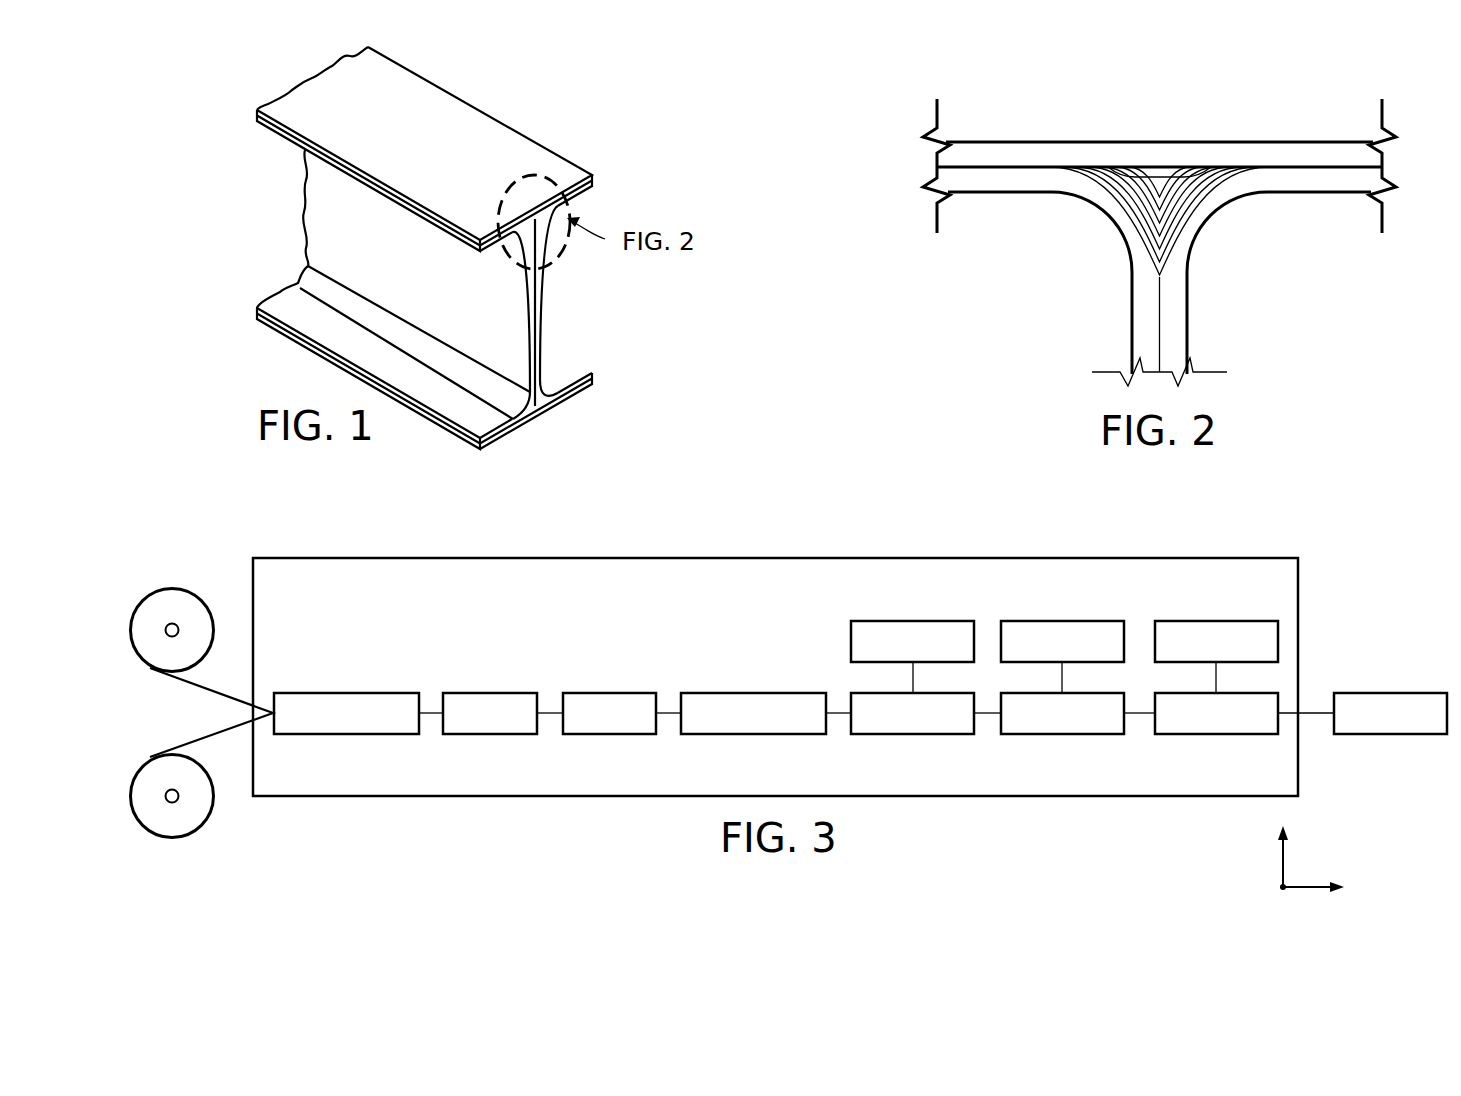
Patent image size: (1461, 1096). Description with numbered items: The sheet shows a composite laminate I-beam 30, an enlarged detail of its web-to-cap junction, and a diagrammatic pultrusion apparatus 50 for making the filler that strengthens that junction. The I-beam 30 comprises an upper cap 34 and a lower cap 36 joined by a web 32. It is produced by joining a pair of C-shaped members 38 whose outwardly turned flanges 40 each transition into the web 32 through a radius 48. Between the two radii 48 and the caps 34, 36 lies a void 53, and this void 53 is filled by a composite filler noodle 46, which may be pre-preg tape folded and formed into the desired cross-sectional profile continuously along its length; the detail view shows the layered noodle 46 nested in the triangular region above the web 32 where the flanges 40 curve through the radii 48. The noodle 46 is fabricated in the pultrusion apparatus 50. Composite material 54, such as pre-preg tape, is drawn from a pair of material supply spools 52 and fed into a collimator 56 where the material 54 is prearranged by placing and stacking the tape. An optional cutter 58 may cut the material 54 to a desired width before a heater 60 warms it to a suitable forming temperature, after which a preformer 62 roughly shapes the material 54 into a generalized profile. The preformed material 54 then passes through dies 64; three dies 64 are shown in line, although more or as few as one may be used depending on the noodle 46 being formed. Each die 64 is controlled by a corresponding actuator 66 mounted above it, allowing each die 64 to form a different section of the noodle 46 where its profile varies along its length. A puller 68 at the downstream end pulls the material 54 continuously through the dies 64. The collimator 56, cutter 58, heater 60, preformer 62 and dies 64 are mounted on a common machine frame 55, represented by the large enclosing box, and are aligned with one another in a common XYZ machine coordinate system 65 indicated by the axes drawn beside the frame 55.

In FIG. 1, the composite laminate I-beam 30 is at (427, 255).
In FIG. 1, the web 32 is at (542, 298).
In FIG. 2, the web 32 is at (1102, 319).
In FIG. 1, the upper cap 34 is at (457, 105).
In FIG. 2, the upper cap 34 is at (1046, 140).
In FIG. 1, the lower cap 36 is at (537, 415).
In FIG. 2, the C-shaped members 38 is at (1132, 330).
In FIG. 2, the outwardly turned flanges 40 is at (990, 194).
In FIG. 2, the composite filler noodle 46 is at (1158, 187).
In FIG. 3, the composite filler noodle 46 is at (1316, 715).
In FIG. 2, the radius 48 is at (1098, 231).
In FIG. 2, the void 53 is at (1212, 206).
In FIG. 3, the pultrusion apparatus 50 is at (775, 637).
In FIG. 3, the material supply spools 52 is at (168, 600).
In FIG. 3, the composite material 54 is at (217, 688).
In FIG. 3, the common machine frame 55 is at (566, 557).
In FIG. 3, the collimator 56 is at (348, 692).
In FIG. 3, the cutter 58 is at (490, 692).
In FIG. 3, the heater 60 is at (609, 692).
In FIG. 3, the preformer 62 is at (753, 692).
In FIG. 3, the dies 64 is at (922, 735).
In FIG. 3, the actuator 66 is at (922, 620).
In FIG. 3, the puller 68 is at (1390, 692).
In FIG. 3, the XYZ machine coordinate system 65 is at (1256, 858).